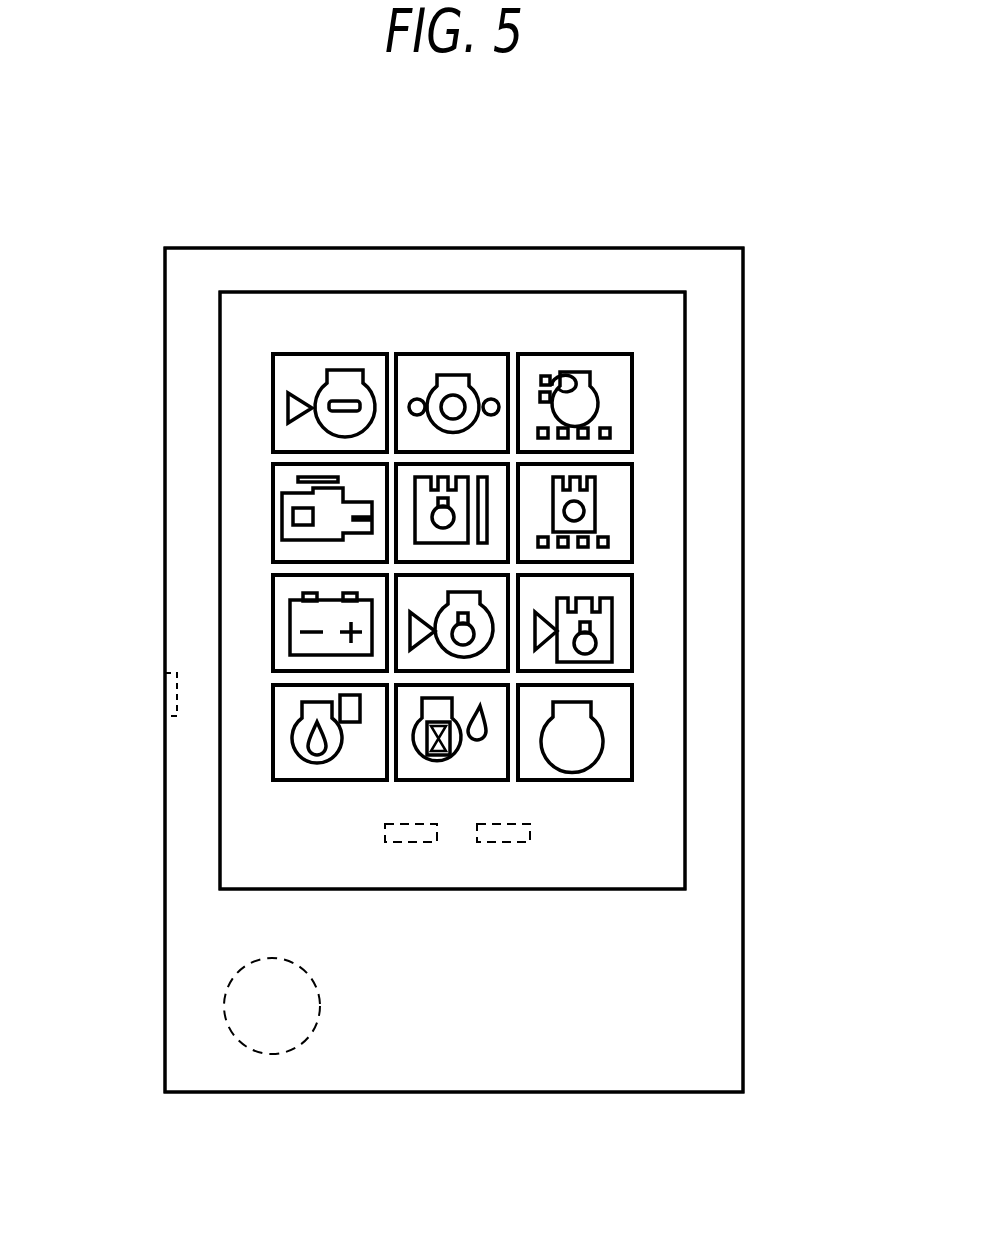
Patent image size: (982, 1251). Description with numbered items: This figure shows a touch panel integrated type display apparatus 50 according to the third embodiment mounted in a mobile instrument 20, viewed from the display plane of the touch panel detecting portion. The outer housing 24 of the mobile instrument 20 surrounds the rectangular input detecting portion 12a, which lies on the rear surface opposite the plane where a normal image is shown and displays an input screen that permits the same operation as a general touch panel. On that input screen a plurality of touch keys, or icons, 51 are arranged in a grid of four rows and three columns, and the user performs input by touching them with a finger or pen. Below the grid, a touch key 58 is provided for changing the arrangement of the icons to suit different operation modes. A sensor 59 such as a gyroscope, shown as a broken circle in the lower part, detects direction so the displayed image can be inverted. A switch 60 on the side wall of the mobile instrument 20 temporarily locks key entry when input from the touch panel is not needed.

The mobile instrument 20 is at (332, 212).
The housing 24 is at (675, 985).
The touch panel integrated type display apparatus 50 is at (490, 258).
The input detecting portion 12a is at (630, 309).
The touch keys (icons) 51 is at (618, 380).
The touch key for changing the arrangement 58 is at (423, 843).
The sensor 59 is at (290, 1053).
The switch 60 is at (155, 728).